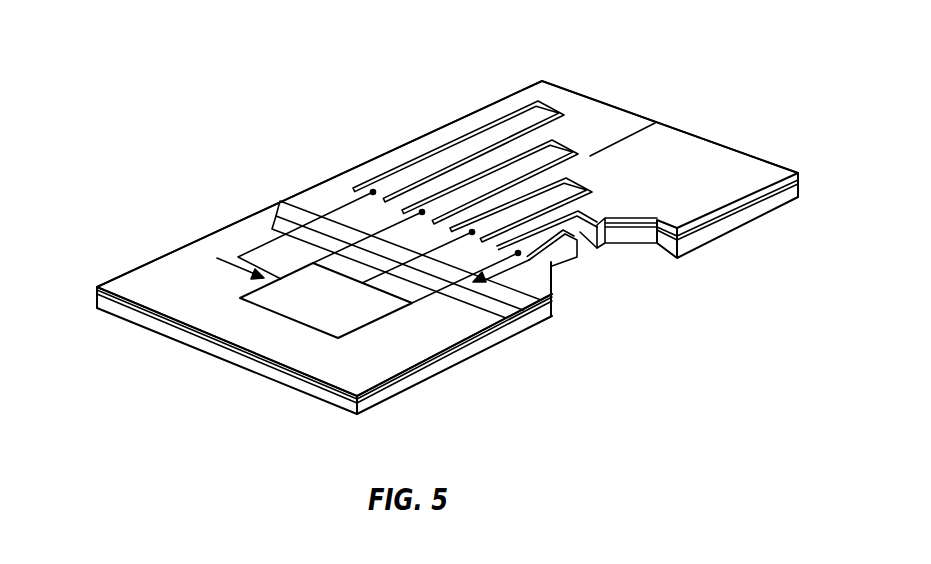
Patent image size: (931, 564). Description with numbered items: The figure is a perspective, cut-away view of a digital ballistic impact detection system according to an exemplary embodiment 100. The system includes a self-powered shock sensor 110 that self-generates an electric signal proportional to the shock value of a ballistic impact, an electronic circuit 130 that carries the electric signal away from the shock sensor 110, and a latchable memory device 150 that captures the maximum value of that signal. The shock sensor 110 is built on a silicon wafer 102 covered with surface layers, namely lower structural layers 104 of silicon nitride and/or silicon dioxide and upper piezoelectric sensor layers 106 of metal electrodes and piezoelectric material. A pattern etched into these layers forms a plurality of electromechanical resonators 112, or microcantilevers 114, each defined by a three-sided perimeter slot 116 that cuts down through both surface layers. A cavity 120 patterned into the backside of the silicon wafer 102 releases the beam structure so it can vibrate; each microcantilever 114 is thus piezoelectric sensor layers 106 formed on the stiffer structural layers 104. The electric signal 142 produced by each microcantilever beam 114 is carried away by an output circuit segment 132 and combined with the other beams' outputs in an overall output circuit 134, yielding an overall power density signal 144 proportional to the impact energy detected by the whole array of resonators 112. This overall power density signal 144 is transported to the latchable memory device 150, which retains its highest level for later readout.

The exemplary embodiment 100 is at (134, 132).
The silicon wafer 102 is at (780, 200).
The structural layers 104 is at (712, 222).
The piezoelectric sensor layers 106 is at (639, 226).
The shock sensor 110 is at (711, 96).
The electromechanical resonators 112 is at (484, 137).
The microcantilever 114 is at (574, 208).
The three-sided perimeter slot 116 is at (567, 152).
The cavity 120 is at (574, 262).
The electronic circuit 130 is at (328, 208).
The output circuit segment 132 is at (445, 282).
The overall output circuit 134 is at (248, 255).
The electric signal 142 is at (508, 280).
The overall power density signal 144 is at (232, 271).
The latchable memory device 150 is at (264, 311).